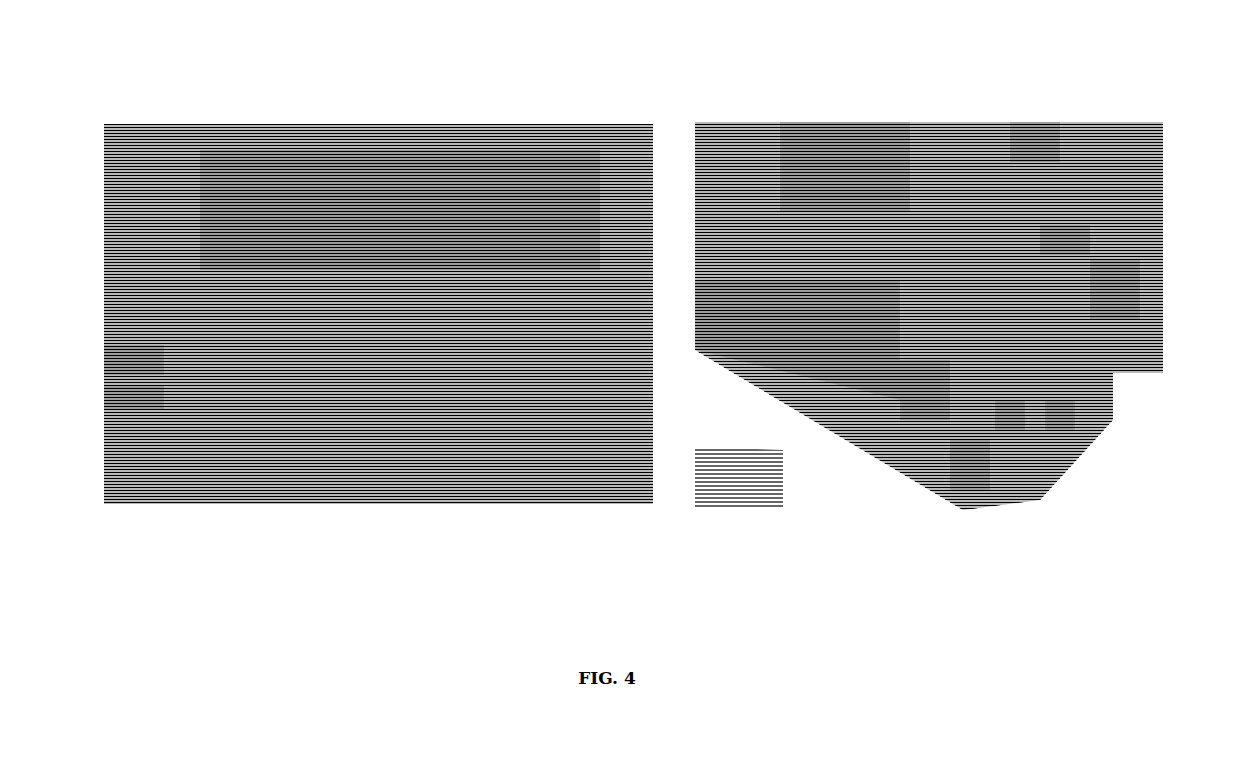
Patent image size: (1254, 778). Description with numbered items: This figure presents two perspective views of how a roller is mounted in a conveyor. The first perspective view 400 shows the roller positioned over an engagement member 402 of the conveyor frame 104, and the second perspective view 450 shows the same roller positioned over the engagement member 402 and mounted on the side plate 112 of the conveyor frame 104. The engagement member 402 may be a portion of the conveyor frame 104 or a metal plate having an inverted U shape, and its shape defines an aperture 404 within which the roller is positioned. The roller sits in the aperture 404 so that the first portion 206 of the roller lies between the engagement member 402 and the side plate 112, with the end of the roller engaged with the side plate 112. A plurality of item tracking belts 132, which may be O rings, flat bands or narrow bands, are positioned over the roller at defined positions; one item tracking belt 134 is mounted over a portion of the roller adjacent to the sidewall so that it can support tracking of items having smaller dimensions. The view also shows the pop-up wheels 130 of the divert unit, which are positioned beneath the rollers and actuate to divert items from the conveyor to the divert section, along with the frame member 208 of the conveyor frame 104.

The perspective view 400 is at (174, 78).
The perspective view 450 is at (947, 85).
The pop-up wheels 130 is at (313, 165).
The item tracking belts 132 is at (872, 138).
The frame rail 208 is at (1034, 142).
The engagement member 402 is at (150, 360).
The aperture 404 is at (150, 395).
The first portion of the roller 206 is at (1110, 283).
The conveyor frame 104 is at (831, 396).
The item tracking belt 134 is at (920, 393).
The side plate 112 is at (967, 463).